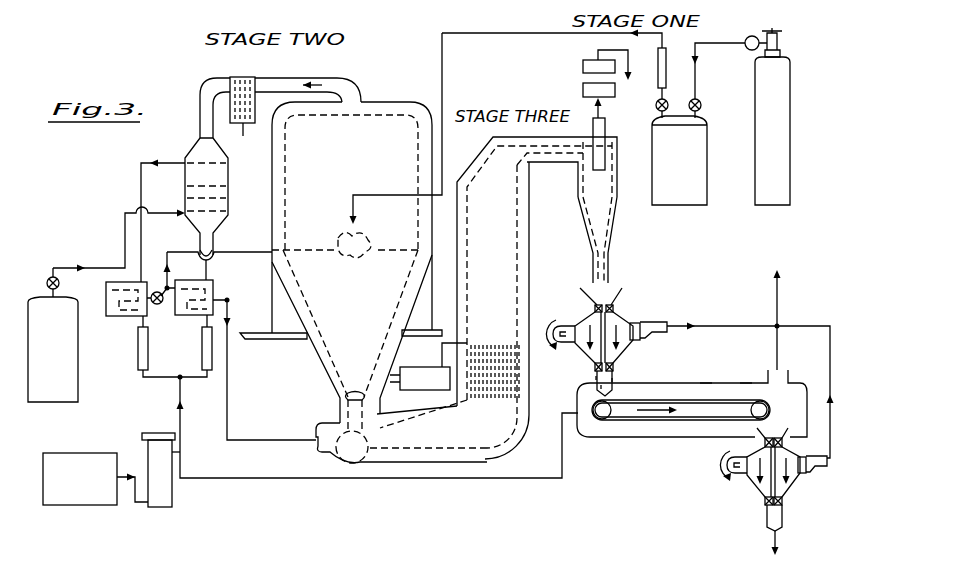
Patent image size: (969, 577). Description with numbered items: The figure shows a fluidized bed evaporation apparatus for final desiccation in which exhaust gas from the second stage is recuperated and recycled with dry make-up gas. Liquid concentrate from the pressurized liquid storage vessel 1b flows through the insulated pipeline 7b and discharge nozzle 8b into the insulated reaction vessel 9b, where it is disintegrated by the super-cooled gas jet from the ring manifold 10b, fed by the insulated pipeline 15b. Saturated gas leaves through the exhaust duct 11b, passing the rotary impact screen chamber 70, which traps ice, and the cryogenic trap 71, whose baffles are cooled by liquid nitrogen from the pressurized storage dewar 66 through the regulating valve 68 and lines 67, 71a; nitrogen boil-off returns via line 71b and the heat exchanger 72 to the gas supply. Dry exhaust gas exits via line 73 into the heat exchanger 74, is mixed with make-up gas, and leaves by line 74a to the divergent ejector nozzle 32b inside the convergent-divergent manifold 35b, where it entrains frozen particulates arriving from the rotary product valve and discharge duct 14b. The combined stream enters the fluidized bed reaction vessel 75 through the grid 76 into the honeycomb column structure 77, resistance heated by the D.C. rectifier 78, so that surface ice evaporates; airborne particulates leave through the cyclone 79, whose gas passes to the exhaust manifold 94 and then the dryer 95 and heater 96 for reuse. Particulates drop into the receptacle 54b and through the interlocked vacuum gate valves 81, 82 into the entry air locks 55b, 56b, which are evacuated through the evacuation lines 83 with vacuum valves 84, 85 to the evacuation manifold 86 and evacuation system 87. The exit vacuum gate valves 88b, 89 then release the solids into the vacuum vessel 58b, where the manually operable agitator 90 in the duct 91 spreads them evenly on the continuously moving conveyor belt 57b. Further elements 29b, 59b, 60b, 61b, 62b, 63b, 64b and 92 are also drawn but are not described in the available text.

The pressurized liquid storage vessel 1b is at (700, 152).
The insulated pipeline 7b is at (496, 42).
The discharge nozzle 8b is at (350, 219).
The insulated reaction vessel 9b is at (390, 101).
The ring manifold 10b is at (340, 259).
The exhaust duct 11b is at (308, 80).
The rotary product valve and discharge duct 14b is at (343, 401).
The insulated pipeline 15b is at (244, 252).
The pump 29b is at (160, 488).
The divergent ejector nozzle 32b is at (333, 455).
The convergent-divergent manifold 35b is at (402, 456).
The receptacle 54b is at (612, 297).
The entry air lock 55b is at (620, 322).
The entry air lock 56b is at (578, 343).
The conveyor belt 57b is at (712, 421).
The vacuum vessel 58b is at (612, 438).
The housing inlet 59b is at (746, 383).
The housing outlet 60b is at (801, 383).
The return line 61b is at (318, 478).
The discharge feeder 62b is at (790, 422).
The feeder drive 63b is at (795, 483).
The feeder motor 64b is at (751, 484).
The pressurized storage dewar 66 is at (66, 333).
The line 67 is at (95, 266).
The regulating valve 68 is at (47, 280).
The rotary impact screen chamber 70 is at (244, 77).
The cryogenic trap 71 is at (228, 165).
The line 71a is at (200, 246).
The line 71b is at (160, 150).
The heat exchanger 72 is at (148, 317).
The line 73 is at (213, 273).
The heat exchanger 74 is at (213, 287).
The line 74a is at (227, 376).
The fluidized bed reaction vessel 75 is at (529, 252).
The grid 76 is at (518, 428).
The honeycomb column structure 77 is at (493, 345).
The D.C. rectifier 78 is at (425, 367).
The cyclone 79 is at (589, 201).
The vacuum gate valve 81 is at (614, 306).
The vacuum gate valve 82 is at (593, 306).
The evacuation lines 83 is at (645, 336).
The vacuum valve 84 is at (666, 322).
The vacuum valve 85 is at (638, 352).
The evacuation manifold 86 is at (733, 326).
The evacuation system 87 is at (778, 292).
The exit vacuum gate valve 88b is at (620, 375).
The exit vacuum gate valve 89 is at (596, 378).
The manually operable agitator 90 is at (613, 380).
The duct 91 is at (600, 387).
The hopper 92 is at (705, 387).
The exhaust manifold 94 is at (593, 126).
The dryer 95 is at (583, 89).
The heater 96 is at (583, 63).